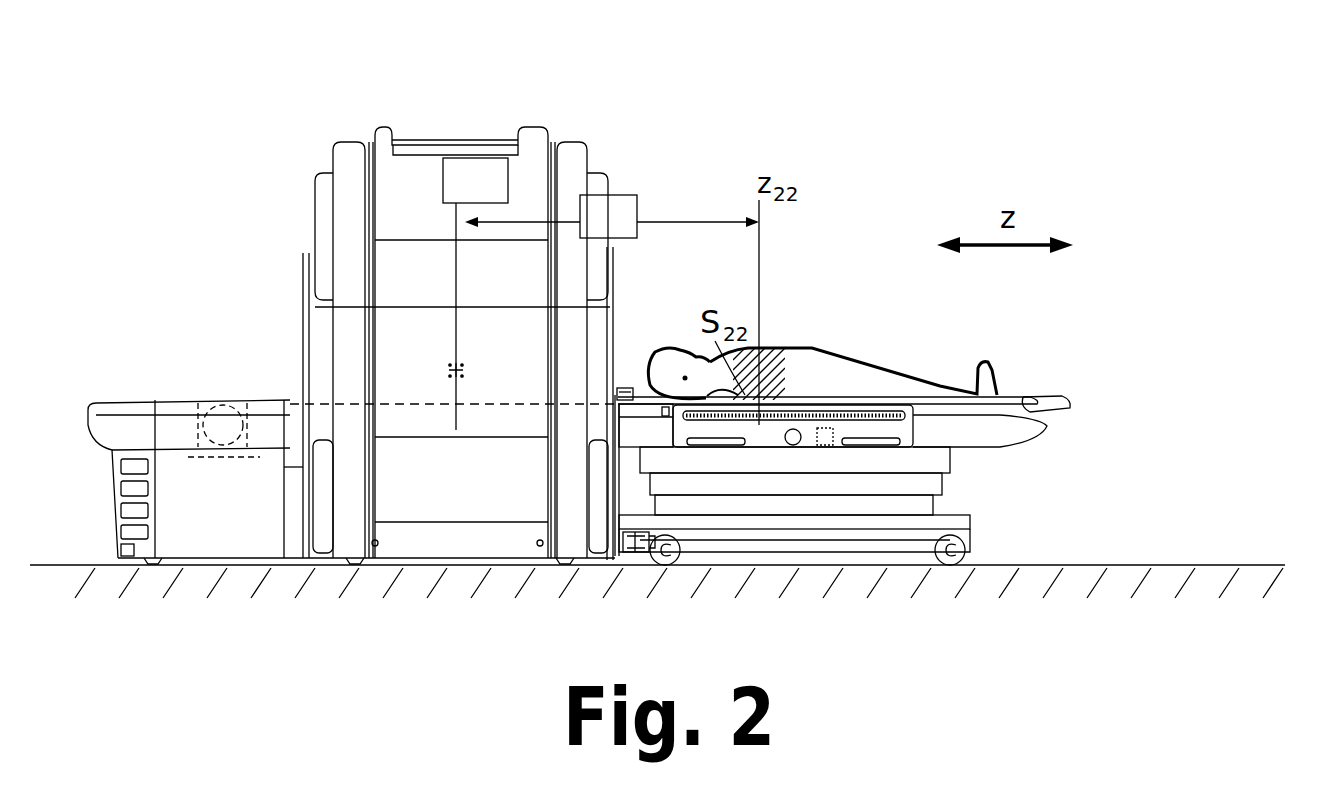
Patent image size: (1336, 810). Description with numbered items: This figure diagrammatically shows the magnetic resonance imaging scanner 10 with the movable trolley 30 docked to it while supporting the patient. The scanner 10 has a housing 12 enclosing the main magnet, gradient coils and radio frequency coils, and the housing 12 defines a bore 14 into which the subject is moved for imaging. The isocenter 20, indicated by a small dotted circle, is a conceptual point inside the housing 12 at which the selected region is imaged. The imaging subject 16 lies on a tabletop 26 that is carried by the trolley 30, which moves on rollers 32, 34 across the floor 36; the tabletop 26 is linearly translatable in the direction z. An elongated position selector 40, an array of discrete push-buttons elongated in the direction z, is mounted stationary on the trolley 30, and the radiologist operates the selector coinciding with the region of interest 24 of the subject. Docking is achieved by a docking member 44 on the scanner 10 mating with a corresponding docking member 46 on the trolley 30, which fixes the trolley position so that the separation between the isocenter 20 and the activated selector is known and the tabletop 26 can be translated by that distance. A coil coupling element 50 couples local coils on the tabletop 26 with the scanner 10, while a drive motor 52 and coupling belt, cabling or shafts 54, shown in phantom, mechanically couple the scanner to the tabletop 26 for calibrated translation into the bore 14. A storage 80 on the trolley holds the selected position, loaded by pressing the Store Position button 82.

The magnetic resonance imaging scanner 10 is at (200, 124).
The housing 12 is at (525, 180).
The bore 14 is at (622, 347).
The imaging subject 16 is at (822, 365).
The isocenter 20 is at (440, 372).
The region of interest 24 is at (757, 408).
The tabletop 26 is at (968, 410).
The movable trolley 30 is at (805, 446).
The roller 32 is at (673, 562).
The roller 34 is at (953, 567).
The floor 36 is at (1262, 567).
The elongated position selector 40 is at (777, 420).
The docking member 44 is at (627, 553).
The docking member 46 is at (657, 570).
The coil coupling element 50 is at (623, 386).
The drive motor 52 is at (217, 428).
The coupling belt, cabling, shafts 54 is at (347, 403).
The storage 80 is at (830, 442).
The Store Position button 82 is at (793, 446).